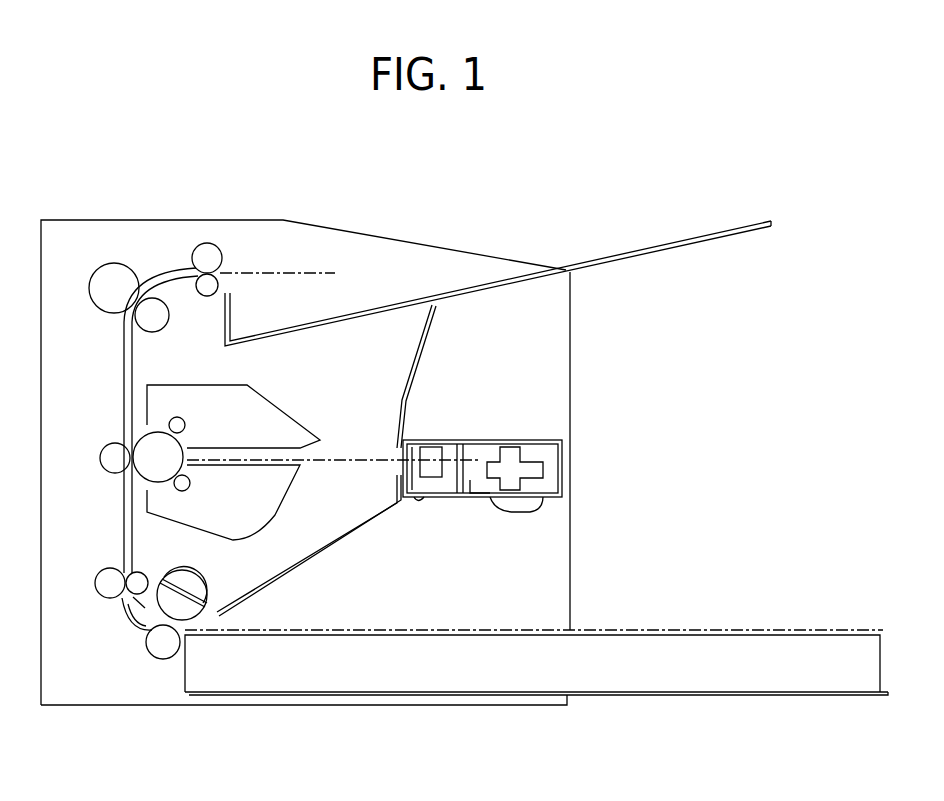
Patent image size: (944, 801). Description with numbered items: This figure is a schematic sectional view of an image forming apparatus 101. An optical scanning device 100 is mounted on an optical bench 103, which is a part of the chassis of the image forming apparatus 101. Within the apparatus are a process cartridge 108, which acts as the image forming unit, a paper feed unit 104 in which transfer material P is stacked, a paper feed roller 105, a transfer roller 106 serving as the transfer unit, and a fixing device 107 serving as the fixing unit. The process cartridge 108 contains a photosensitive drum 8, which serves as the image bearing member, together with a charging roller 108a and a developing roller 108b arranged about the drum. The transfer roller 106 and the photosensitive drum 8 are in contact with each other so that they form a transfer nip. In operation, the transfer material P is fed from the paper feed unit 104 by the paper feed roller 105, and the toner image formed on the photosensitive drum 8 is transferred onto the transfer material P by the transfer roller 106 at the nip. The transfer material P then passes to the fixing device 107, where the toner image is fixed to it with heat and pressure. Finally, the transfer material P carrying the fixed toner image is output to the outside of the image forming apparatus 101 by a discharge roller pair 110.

The image forming apparatus 101 is at (63, 226).
The fixing device 107 is at (118, 276).
The discharge roller pair 110 is at (205, 250).
The photosensitive drum 8 is at (146, 440).
The transfer roller 106 is at (110, 465).
The process cartridge 108 is at (268, 400).
The charging roller 108a is at (186, 423).
The developing roller 108b is at (191, 488).
The paper feed roller 105 is at (173, 579).
The optical scanning device 100 is at (482, 472).
The optical bench 103 is at (458, 500).
The transfer material P is at (668, 630).
The paper feed unit 104 is at (700, 697).